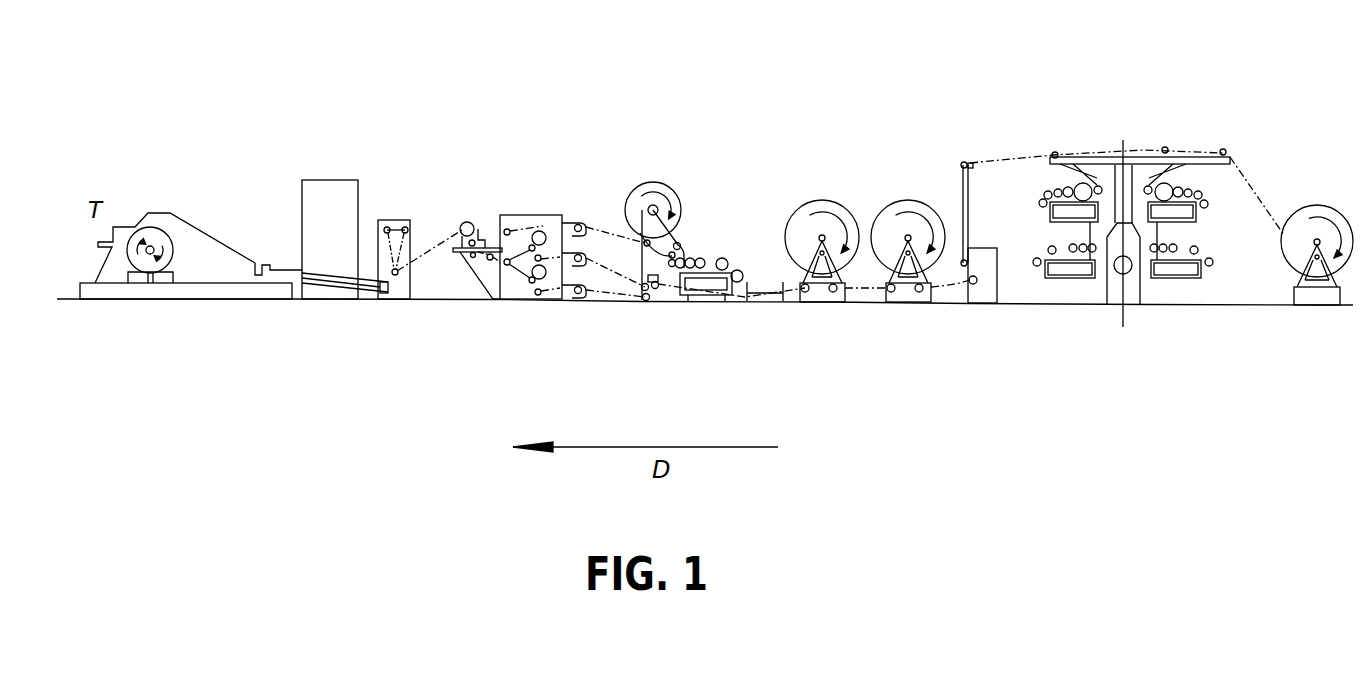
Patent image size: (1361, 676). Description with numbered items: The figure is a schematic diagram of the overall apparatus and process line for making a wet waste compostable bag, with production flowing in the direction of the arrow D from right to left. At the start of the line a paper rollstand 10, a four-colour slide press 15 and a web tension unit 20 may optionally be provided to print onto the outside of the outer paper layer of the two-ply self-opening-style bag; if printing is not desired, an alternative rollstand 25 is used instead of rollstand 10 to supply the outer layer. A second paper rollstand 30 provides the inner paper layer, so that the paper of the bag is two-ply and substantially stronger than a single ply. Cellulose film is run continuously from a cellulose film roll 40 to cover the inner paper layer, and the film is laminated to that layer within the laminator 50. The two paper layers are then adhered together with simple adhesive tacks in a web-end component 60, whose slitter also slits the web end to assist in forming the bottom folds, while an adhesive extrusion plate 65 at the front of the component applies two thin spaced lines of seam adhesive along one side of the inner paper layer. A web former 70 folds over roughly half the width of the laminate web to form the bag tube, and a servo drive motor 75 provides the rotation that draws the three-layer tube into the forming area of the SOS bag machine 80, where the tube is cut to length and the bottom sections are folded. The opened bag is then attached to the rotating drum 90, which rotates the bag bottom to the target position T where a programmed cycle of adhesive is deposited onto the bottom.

The paper rollstand 10 is at (1290, 200).
The 4-colour slide press 15 is at (1166, 148).
The web tension unit 20 is at (982, 304).
The rollstand 25 is at (896, 210).
The second paper rollstand 30 is at (810, 210).
The cellulose film roll 40 is at (633, 200).
The laminator 50 is at (660, 302).
The web-end component 60 is at (510, 302).
The adhesive extrusion plate 65 is at (466, 221).
The web former 70 is at (337, 305).
The servo drive motor 75 is at (227, 243).
The SOS bag machine 80 is at (156, 180).
The rotating drum 90 is at (172, 247).